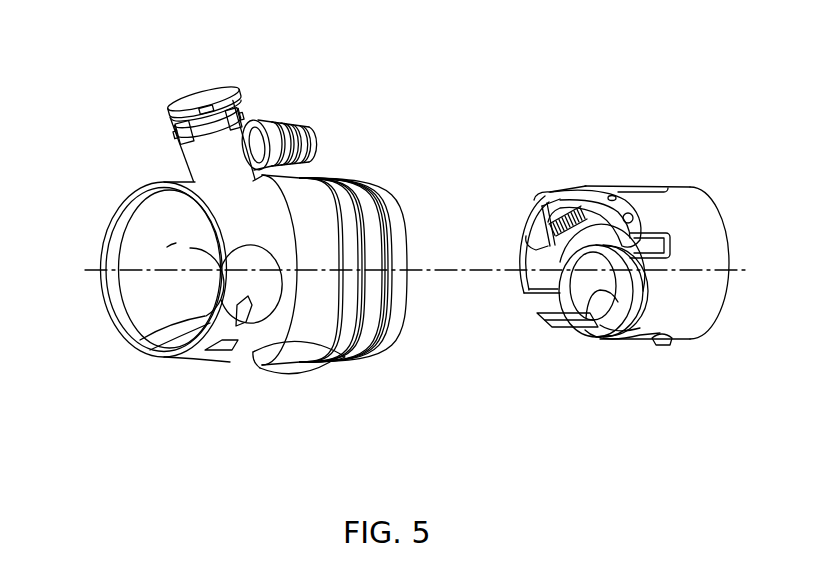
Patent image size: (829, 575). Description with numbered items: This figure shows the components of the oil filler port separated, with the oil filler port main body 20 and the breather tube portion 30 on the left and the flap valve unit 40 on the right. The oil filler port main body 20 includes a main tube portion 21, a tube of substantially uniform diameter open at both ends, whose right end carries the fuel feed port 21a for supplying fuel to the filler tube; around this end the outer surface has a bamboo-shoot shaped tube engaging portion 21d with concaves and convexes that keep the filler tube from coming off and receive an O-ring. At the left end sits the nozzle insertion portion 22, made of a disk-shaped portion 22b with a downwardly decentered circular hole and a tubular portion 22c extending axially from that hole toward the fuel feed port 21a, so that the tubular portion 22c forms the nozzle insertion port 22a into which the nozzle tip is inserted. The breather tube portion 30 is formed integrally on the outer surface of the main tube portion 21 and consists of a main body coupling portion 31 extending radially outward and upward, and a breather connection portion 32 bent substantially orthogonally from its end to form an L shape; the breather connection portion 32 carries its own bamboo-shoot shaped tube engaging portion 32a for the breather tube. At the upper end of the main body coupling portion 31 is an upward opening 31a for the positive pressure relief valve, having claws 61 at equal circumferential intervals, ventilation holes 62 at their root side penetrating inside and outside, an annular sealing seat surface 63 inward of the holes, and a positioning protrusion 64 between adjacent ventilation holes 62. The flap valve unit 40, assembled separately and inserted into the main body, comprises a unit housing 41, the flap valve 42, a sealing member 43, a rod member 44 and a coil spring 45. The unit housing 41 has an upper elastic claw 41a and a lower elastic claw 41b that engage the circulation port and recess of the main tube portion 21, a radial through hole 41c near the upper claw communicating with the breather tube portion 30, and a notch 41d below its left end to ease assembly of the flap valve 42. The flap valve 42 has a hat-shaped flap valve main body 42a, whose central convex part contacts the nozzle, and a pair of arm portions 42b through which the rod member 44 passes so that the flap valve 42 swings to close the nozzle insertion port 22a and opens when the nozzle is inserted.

The oil filler port main body 20 is at (185, 362).
The main tube portion 21 is at (233, 365).
The fuel feed port 21a is at (395, 350).
The tube engaging portion 21d is at (341, 360).
The nozzle insertion portion 22 is at (134, 245).
The nozzle insertion port 22a is at (166, 296).
The disk-shaped portion 22b is at (151, 215).
The tubular portion 22c is at (170, 320).
The breather tube portion 30 is at (163, 122).
The main body coupling portion 31 is at (203, 165).
The opening 31a is at (183, 92).
The breather connection portion 32 is at (290, 126).
The tube engaging portion 32a is at (300, 128).
The claws 61 is at (207, 108).
The ventilation holes 62 is at (220, 122).
The annular sealing seat surface 63 is at (197, 92).
The positioning protrusion 64 is at (240, 118).
The flap valve unit 40 is at (673, 165).
The unit housing 41 is at (707, 320).
The elastic claw 41a is at (628, 186).
The elastic claw 41b is at (663, 345).
The through hole 41c is at (612, 186).
The notch 41d is at (558, 330).
The flap valve 42 is at (577, 295).
The flap valve main body 42a is at (597, 308).
The arm portions 42b is at (545, 242).
The sealing member 43 is at (607, 324).
The rod member 44 is at (612, 196).
The coil spring 45 is at (570, 222).